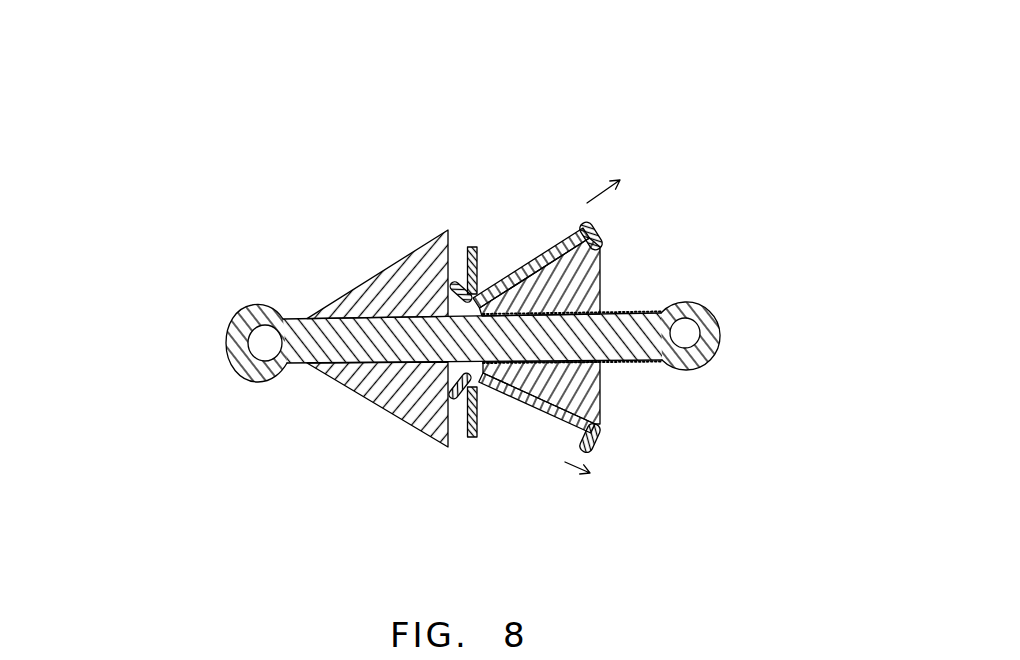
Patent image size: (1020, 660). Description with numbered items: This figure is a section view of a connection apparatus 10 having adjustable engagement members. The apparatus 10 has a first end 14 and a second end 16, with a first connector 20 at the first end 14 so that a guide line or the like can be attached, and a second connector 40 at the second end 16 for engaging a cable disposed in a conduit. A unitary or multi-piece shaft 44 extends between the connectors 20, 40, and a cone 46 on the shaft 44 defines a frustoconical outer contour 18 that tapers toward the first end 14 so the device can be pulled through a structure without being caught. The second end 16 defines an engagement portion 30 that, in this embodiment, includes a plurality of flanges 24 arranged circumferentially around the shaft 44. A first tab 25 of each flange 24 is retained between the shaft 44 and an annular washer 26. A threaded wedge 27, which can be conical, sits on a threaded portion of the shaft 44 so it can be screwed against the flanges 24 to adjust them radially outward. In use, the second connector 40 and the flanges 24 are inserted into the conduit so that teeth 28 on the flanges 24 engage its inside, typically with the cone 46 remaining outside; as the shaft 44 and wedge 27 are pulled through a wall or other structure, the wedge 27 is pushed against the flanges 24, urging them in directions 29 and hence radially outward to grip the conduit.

The connection apparatus 10 is at (689, 112).
The first end 14 is at (183, 275).
The second end 16 is at (770, 427).
The frustoconical outer contour 18 is at (388, 412).
The first connector 20 is at (238, 380).
The flanges 24 is at (536, 256).
The first tab 25 is at (457, 247).
The annular washer 26 is at (482, 250).
The threaded wedge 27 is at (600, 270).
The teeth 28 is at (588, 230).
The directions 29 is at (595, 190).
The engagement portion 30 is at (607, 510).
The second connector 40 is at (703, 303).
The shaft 44 is at (355, 347).
The cone 46 is at (368, 282).